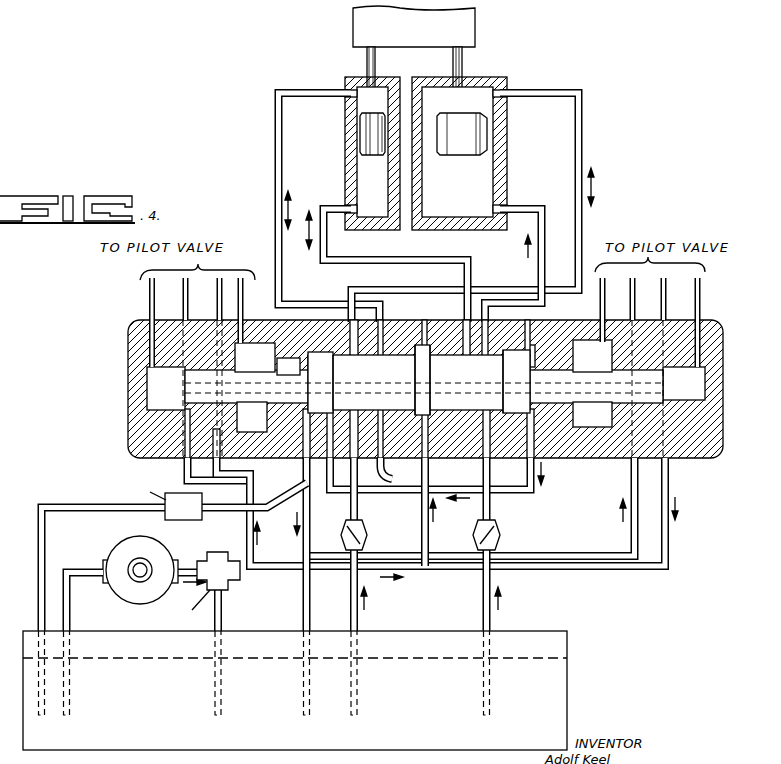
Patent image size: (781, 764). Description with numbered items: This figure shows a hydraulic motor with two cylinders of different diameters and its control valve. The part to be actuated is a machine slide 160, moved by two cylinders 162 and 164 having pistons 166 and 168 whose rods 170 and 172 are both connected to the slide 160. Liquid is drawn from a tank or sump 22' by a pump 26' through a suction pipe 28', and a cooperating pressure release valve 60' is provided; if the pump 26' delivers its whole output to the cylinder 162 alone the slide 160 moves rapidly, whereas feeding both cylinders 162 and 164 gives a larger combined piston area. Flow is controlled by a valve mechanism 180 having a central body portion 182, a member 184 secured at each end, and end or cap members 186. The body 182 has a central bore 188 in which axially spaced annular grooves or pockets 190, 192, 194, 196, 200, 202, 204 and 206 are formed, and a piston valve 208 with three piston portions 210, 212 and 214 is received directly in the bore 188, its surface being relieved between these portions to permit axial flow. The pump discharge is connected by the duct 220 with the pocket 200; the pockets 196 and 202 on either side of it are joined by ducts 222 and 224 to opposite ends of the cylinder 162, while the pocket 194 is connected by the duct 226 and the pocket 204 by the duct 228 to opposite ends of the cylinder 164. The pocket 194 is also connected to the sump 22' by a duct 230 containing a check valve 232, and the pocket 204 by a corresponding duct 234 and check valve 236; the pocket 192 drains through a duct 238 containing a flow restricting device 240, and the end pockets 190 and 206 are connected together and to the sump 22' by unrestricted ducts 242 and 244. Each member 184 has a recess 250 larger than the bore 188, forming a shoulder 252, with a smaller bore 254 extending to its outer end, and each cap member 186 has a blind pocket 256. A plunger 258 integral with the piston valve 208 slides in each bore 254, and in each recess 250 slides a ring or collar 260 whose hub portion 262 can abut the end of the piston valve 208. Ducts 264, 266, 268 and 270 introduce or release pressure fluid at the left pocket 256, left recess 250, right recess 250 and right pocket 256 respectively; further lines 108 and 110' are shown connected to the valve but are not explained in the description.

The machine slide 160 is at (478, 26).
The rod 170 is at (366, 58).
The rod 172 is at (463, 62).
The cylinder 162 is at (348, 178).
The cylinder 164 is at (505, 170).
The piston 166 is at (360, 135).
The piston 168 is at (462, 134).
The duct 222 is at (275, 165).
The duct 224 is at (355, 253).
The duct 226 is at (583, 146).
The duct 228 is at (538, 278).
The valve mechanism 180 is at (118, 341).
The end or cap member 186 is at (126, 322).
The central body portion 182 is at (425, 316).
The central bore 188 is at (452, 320).
The body member 184 is at (590, 318).
The duct 264 is at (150, 290).
The duct 266 is at (228, 278).
The duct 268 is at (606, 284).
The duct 270 is at (712, 290).
The conduit 110' is at (439, 413).
The conduit 108 is at (218, 303).
The recess 250 is at (248, 318).
The blind pocket 256 is at (148, 405).
The plunger 258 is at (195, 383).
The ring or collar 260 is at (285, 371).
The hub portion 262 is at (296, 405).
The bore 254 is at (258, 400).
The shoulder 252 is at (262, 462).
The piston portion 210 is at (320, 372).
The piston valve 208 is at (380, 380).
The groove or pocket 192 is at (352, 395).
The groove or pocket 196 is at (370, 395).
The piston portion 212 is at (420, 376).
The groove or pocket 204 is at (467, 395).
The piston portion 214 is at (516, 381).
The groove or pocket 190 is at (298, 462).
The groove or pocket 194 is at (358, 544).
The groove or pocket 200 is at (395, 472).
The conduit 202 is at (440, 512).
The groove or pocket 206 is at (503, 544).
The unrestricted duct 242 is at (540, 490).
The flow restricting device 240 is at (175, 557).
The duct 238 is at (275, 537).
The unrestricted duct 244 is at (318, 515).
The duct 230 is at (365, 510).
The check valve 232 is at (368, 538).
The duct 220 is at (428, 536).
The duct 234 is at (493, 514).
The check valve 236 is at (501, 540).
The pump 26' is at (141, 566).
The suction pipe 28' is at (76, 589).
The pressure release valve 60' is at (179, 591).
The liquid tank or sump 22' is at (295, 690).